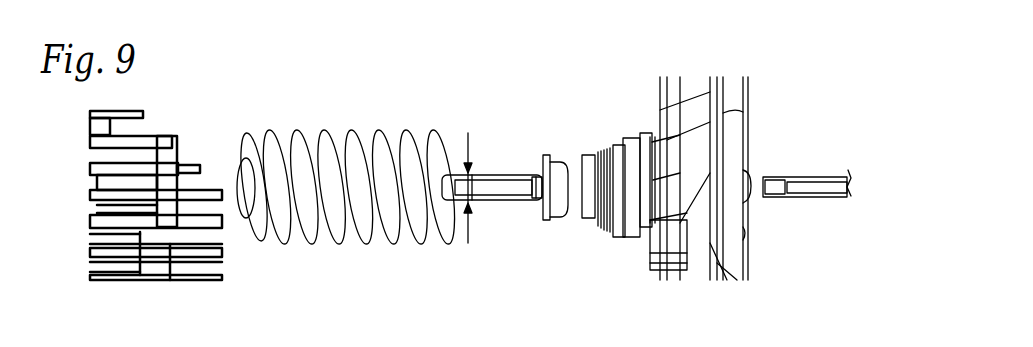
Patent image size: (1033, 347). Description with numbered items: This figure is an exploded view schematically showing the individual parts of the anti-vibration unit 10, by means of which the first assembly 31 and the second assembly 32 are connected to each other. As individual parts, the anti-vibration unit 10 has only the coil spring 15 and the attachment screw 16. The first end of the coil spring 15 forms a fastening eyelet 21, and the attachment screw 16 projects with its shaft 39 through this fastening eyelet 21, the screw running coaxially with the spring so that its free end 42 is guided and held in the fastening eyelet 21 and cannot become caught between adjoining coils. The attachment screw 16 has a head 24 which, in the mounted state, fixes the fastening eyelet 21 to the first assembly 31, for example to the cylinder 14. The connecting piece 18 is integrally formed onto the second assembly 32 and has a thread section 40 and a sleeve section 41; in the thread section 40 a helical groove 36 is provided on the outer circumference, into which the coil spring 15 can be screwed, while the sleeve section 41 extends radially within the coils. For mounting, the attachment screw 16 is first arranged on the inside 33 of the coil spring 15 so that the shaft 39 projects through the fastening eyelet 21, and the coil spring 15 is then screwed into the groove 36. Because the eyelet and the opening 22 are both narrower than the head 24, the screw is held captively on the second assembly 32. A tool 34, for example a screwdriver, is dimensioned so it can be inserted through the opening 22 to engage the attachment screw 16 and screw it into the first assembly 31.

The anti-vibration unit 10 is at (403, 128).
The cylinder 14 is at (133, 155).
The coil spring 15 is at (352, 130).
The attachment screw 16 is at (513, 178).
The connecting piece 18 is at (592, 215).
The fastening eyelet 21 is at (247, 153).
The opening 22 is at (745, 175).
The head 24 is at (555, 167).
The first assembly 31 is at (90, 278).
The second assembly 32 is at (698, 88).
The inside of the coil spring 33 is at (275, 207).
The tool 34 is at (822, 185).
The groove 36 is at (640, 140).
The shaft 39 is at (507, 200).
The thread section 40 is at (629, 236).
The sleeve section 41 is at (592, 155).
The free end 42 is at (452, 230).